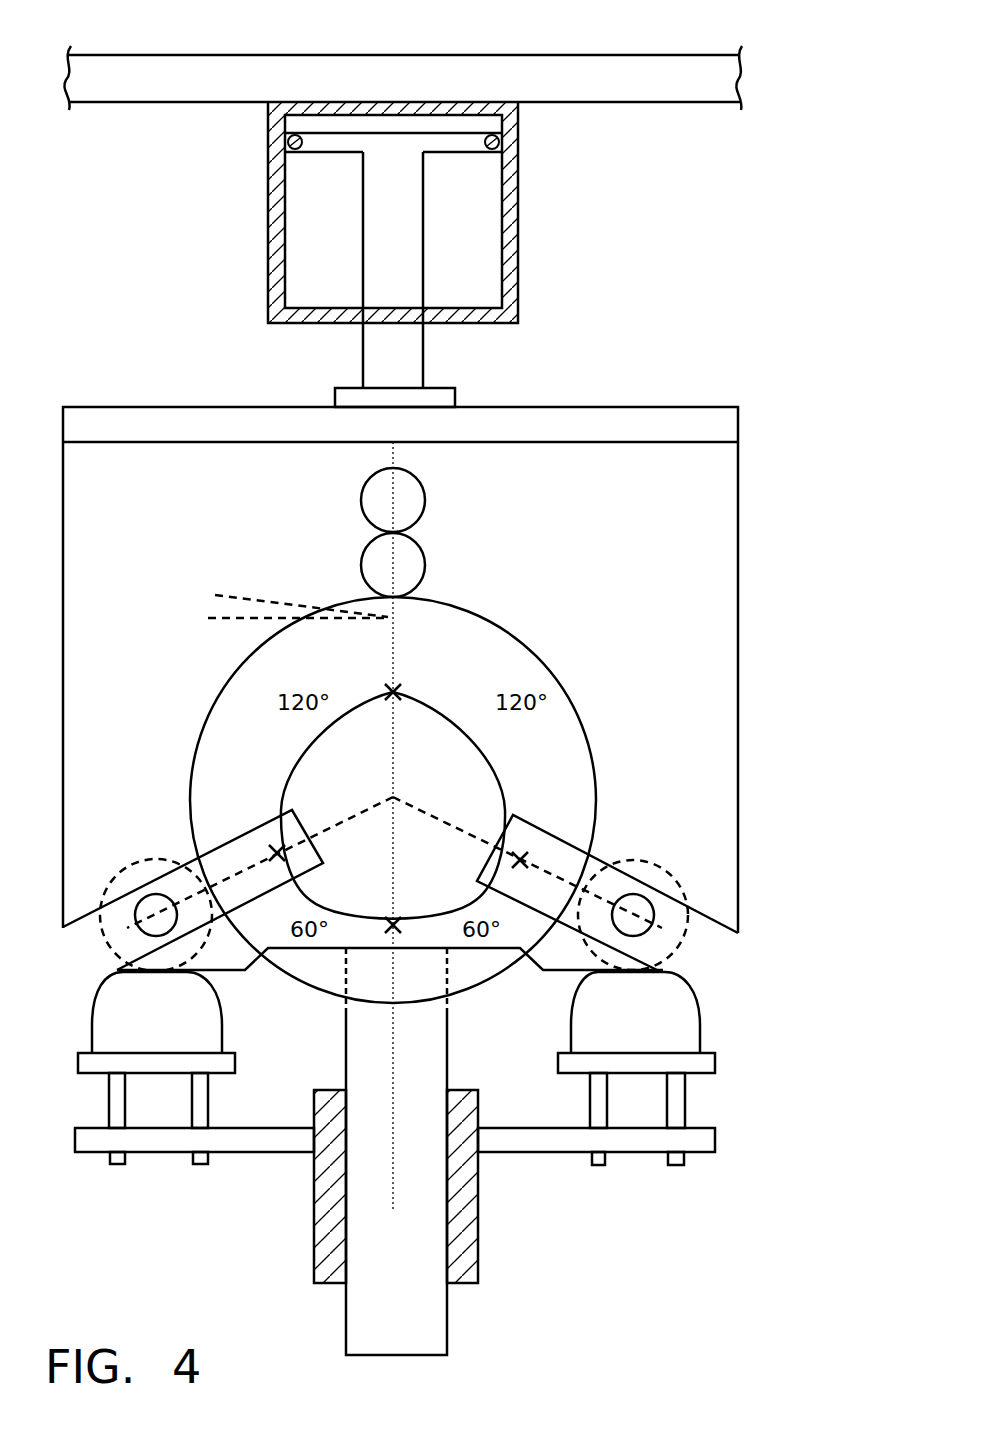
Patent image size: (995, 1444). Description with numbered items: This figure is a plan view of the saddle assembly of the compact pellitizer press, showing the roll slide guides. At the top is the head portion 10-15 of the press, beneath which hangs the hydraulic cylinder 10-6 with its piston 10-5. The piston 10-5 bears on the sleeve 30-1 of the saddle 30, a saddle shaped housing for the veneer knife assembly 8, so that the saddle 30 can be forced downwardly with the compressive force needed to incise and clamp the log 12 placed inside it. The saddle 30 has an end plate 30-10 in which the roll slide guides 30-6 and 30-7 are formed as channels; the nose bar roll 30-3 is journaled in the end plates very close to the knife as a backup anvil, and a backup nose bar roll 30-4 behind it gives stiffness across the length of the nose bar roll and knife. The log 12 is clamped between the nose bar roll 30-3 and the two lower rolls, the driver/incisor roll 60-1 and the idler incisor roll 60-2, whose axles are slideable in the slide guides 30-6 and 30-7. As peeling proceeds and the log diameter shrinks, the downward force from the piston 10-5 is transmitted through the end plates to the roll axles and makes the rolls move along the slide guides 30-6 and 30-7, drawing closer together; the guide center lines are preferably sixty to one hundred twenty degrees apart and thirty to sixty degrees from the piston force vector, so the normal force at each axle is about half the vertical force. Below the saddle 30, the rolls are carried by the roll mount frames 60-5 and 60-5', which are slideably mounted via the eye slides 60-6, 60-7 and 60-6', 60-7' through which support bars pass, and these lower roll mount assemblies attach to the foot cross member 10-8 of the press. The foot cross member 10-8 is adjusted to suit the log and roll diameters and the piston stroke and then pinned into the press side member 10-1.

The head portion 10-15 is at (626, 54).
The hydraulic cylinder 10-6 is at (518, 237).
The piston 10-5 is at (423, 370).
The sleeve 30-1 is at (455, 400).
The saddle 30 is at (449, 625).
The end plate 30-10 is at (738, 638).
The nose bar roll 30-3 is at (425, 510).
The backup nose bar roll 30-4 is at (425, 577).
The veneer knife assembly 8 is at (242, 597).
The log 12 is at (518, 641).
The roll slide guide 30-6 is at (237, 837).
The roll slide guide 30-7 is at (523, 822).
The idler incisor roll 60-2 is at (122, 872).
The driver/incisor roll 60-1 is at (655, 865).
The roll mount frame 60-5' is at (193, 1022).
The roll mount frame 60-5 is at (675, 1022).
The press side member 10-1 is at (447, 1058).
The foot cross member 10-8 is at (478, 1118).
The eye slide 60-6' is at (120, 1136).
The eye slide 60-7' is at (215, 1136).
The eye slide 60-6 is at (598, 1145).
The eye slide 60-7 is at (675, 1145).